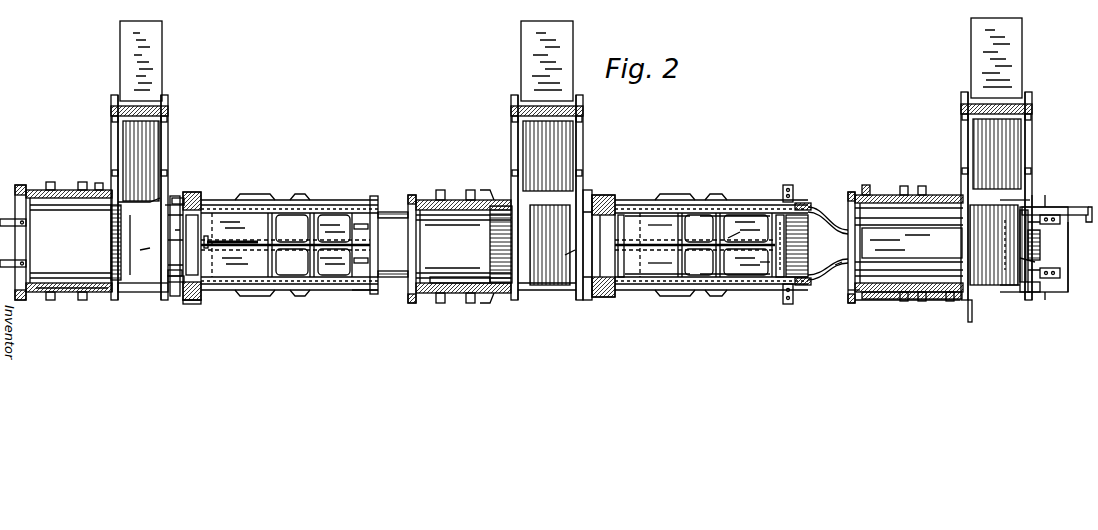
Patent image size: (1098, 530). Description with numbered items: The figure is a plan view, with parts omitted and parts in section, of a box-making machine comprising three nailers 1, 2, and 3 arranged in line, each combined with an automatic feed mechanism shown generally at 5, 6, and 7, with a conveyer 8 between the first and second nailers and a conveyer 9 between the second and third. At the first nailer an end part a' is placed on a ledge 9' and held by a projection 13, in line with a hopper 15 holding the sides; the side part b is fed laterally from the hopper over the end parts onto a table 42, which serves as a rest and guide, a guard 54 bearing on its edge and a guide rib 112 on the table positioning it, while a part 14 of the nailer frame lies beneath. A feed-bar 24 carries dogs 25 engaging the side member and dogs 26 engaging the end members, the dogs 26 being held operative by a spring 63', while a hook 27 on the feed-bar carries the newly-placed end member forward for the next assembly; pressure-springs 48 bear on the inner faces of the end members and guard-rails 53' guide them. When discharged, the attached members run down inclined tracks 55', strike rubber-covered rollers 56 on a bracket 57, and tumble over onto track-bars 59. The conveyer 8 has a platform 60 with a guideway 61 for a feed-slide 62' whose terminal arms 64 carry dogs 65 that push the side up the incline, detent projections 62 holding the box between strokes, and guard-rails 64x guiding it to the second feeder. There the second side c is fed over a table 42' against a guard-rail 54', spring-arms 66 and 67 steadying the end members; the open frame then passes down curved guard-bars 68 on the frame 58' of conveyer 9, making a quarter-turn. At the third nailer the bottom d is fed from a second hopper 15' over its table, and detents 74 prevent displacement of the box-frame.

The nailer 1 is at (905, 231).
The nailer 2 is at (459, 234).
The nailer 3 is at (56, 231).
The feed mechanism 5 is at (1044, 230).
The feed mechanism 6 is at (599, 235).
The feed mechanism 7 is at (184, 234).
The conveyer 8 is at (711, 257).
The conveyer 9 is at (289, 261).
The tracks or ledges 9' is at (1035, 251).
The projection 13 is at (972, 308).
The base plate 14 is at (950, 302).
The hopper 15 is at (981, 159).
The hopper 15' is at (531, 160).
The feed-bar 24 is at (1048, 296).
The dogs 25 is at (1016, 246).
The dogs 26 is at (579, 257).
The hook 27 is at (1080, 225).
The table 42 is at (965, 245).
The table or plate 42' is at (483, 244).
The pressure-springs 48 is at (880, 228).
The guard-rails 53' is at (912, 310).
The guard 54 is at (1009, 329).
The guard-rail 54' is at (547, 305).
The inclined tracks 55' is at (821, 206).
The rollers 56 is at (808, 286).
The bracket 57 is at (798, 248).
The frame 58' is at (365, 305).
The track-bars 59 is at (447, 276).
The platform 60 is at (658, 228).
The guideway 61 is at (658, 265).
The detent projections 62 is at (630, 265).
The feed-slide 62' is at (740, 229).
The spring 63' is at (1060, 247).
The terminal arms 64 is at (782, 240).
The guard-rails 64x is at (742, 292).
The dogs 65 is at (754, 263).
The spring-arms 66 is at (528, 290).
The spring-arms 67 is at (464, 293).
The curved guard-bars 68 is at (358, 224).
The detents 74 is at (195, 200).
The guide blocks or ribs 112 is at (165, 250).
The end member a is at (1057, 203).
The end part a' is at (1000, 300).
The side part b is at (997, 245).
The side member c is at (550, 245).
The bottom d is at (138, 245).